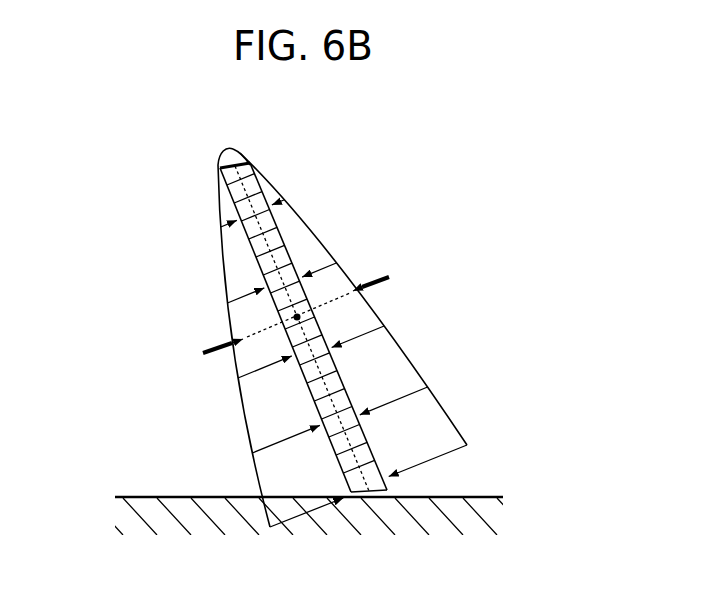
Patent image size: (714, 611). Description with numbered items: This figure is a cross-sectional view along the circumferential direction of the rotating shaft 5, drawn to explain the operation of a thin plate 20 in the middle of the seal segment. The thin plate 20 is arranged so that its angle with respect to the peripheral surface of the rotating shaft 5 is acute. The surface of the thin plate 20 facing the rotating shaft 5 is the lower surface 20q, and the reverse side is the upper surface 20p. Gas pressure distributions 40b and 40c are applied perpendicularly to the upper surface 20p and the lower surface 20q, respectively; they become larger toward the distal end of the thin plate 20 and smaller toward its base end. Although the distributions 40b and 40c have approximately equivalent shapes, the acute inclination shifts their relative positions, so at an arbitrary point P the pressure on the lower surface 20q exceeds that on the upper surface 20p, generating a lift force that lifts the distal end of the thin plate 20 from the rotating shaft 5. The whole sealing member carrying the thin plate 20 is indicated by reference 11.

The blade (vane) 11 is at (318, 319).
The thin plate 20 is at (347, 327).
The upper surface 20p is at (369, 434).
The lower surface 20q is at (329, 458).
The gas pressure distribution 40b is at (403, 350).
The gas pressure distribution 40c is at (222, 262).
The arbitrary point P is at (293, 316).
The rotating shaft 5 is at (478, 505).